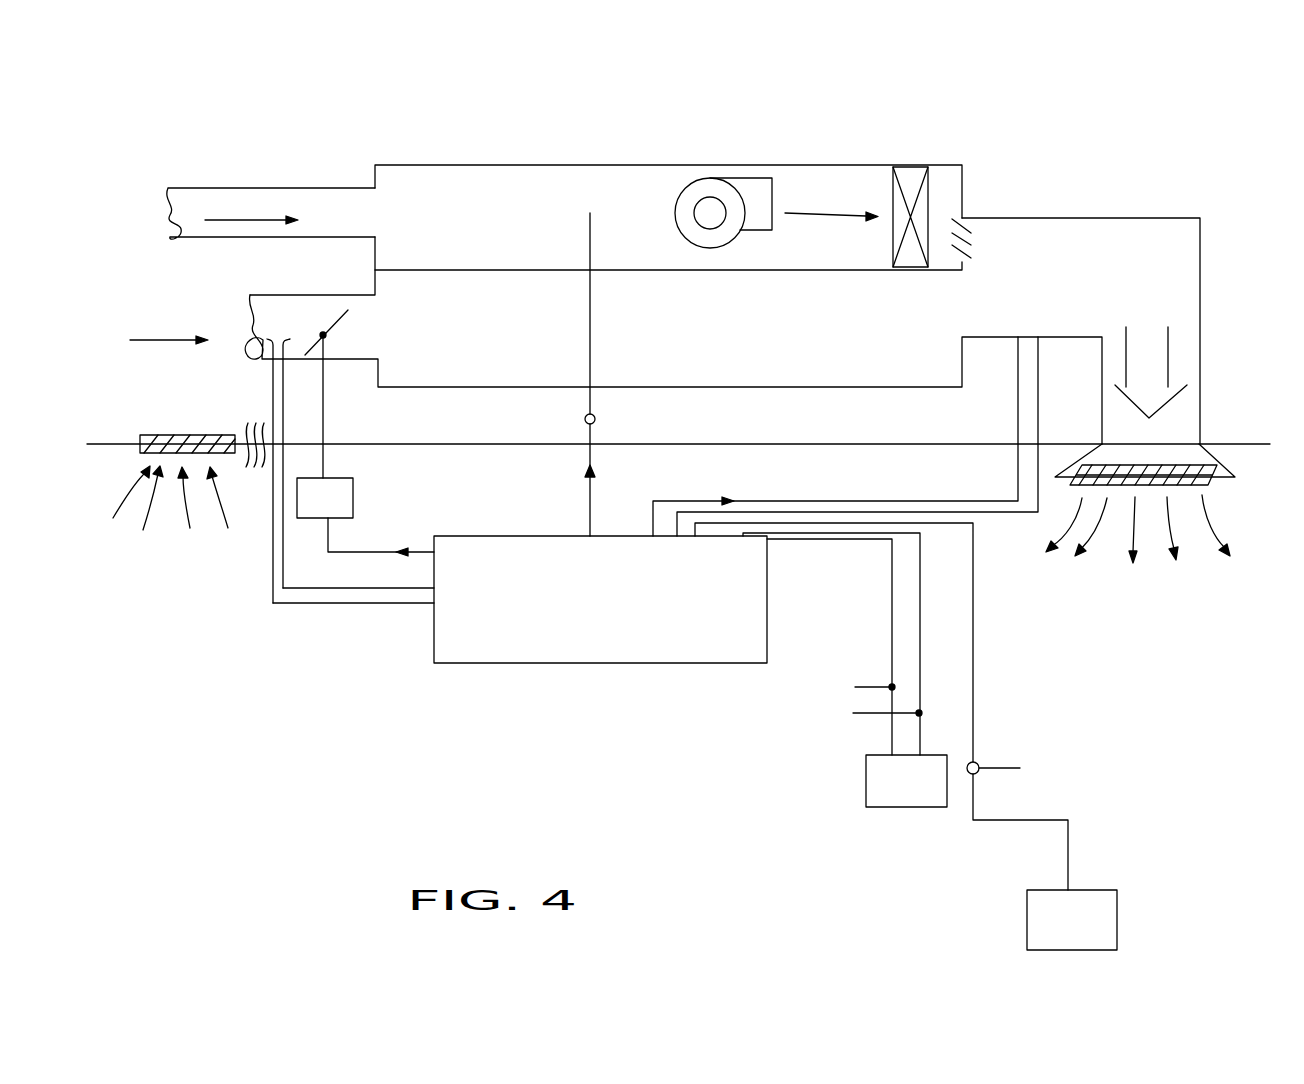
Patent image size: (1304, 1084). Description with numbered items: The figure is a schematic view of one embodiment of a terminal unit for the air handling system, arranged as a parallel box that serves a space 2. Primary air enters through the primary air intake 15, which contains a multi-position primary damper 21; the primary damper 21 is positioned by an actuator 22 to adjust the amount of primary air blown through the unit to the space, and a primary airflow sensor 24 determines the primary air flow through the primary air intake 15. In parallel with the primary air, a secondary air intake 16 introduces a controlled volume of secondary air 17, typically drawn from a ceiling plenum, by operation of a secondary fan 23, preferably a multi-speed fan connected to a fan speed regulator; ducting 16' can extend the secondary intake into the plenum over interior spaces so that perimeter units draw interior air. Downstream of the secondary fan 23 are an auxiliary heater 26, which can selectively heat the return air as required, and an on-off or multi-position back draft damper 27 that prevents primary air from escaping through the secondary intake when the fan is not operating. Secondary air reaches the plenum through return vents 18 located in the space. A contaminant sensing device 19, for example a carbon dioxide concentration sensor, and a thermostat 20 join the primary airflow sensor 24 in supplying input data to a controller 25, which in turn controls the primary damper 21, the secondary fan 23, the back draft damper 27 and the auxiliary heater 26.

The room / interior space 2 is at (250, 295).
The primary air intake 15 is at (313, 295).
The secondary air intake 16 is at (648, 196).
The ducting 16' is at (271, 185).
The secondary air 17 is at (279, 217).
The return vents 18 is at (173, 472).
The sensing device 19 is at (1027, 930).
The thermostat 20 is at (866, 782).
The primary damper 21 is at (330, 318).
The actuator 22 is at (353, 505).
The secondary fan 23 is at (740, 188).
The primary airflow sensor 24 is at (266, 358).
The controller 25 is at (563, 665).
The auxiliary heater 26 is at (908, 165).
The back draft damper 27 is at (962, 218).